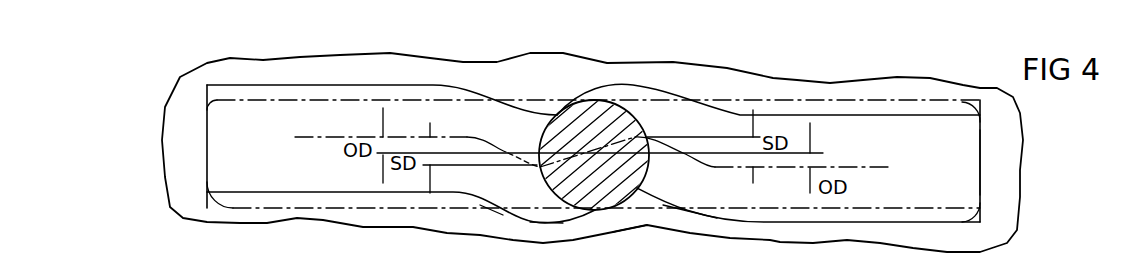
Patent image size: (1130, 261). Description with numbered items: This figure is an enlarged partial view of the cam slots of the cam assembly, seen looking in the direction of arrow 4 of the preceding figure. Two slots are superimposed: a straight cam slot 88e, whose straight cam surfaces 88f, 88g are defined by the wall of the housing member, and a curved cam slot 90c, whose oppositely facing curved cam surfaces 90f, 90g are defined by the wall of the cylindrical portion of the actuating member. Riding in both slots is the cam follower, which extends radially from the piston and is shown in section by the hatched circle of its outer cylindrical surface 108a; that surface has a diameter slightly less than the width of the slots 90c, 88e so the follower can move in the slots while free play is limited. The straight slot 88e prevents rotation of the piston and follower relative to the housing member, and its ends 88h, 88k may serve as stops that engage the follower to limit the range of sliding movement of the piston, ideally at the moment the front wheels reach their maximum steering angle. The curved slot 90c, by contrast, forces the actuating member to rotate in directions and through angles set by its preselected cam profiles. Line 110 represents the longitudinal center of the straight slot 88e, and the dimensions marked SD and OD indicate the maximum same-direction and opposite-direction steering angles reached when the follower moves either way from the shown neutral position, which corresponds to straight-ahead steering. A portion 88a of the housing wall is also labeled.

The direction arrow 4 is at (630, 243).
The first tube portion 88a is at (533, 241).
The straight cam slot 88e is at (214, 146).
The straight cam surface 88f is at (207, 114).
The straight cam surface 88g is at (207, 182).
The end of straight slot 88h is at (480, 233).
The end of straight slot 88k is at (693, 233).
The curved cam slot 90c is at (968, 173).
The curved cam surface 90f is at (980, 121).
The curved cam surface 90g is at (980, 203).
The outer cylindrical surface 108a is at (543, 143).
The line 110 is at (823, 153).